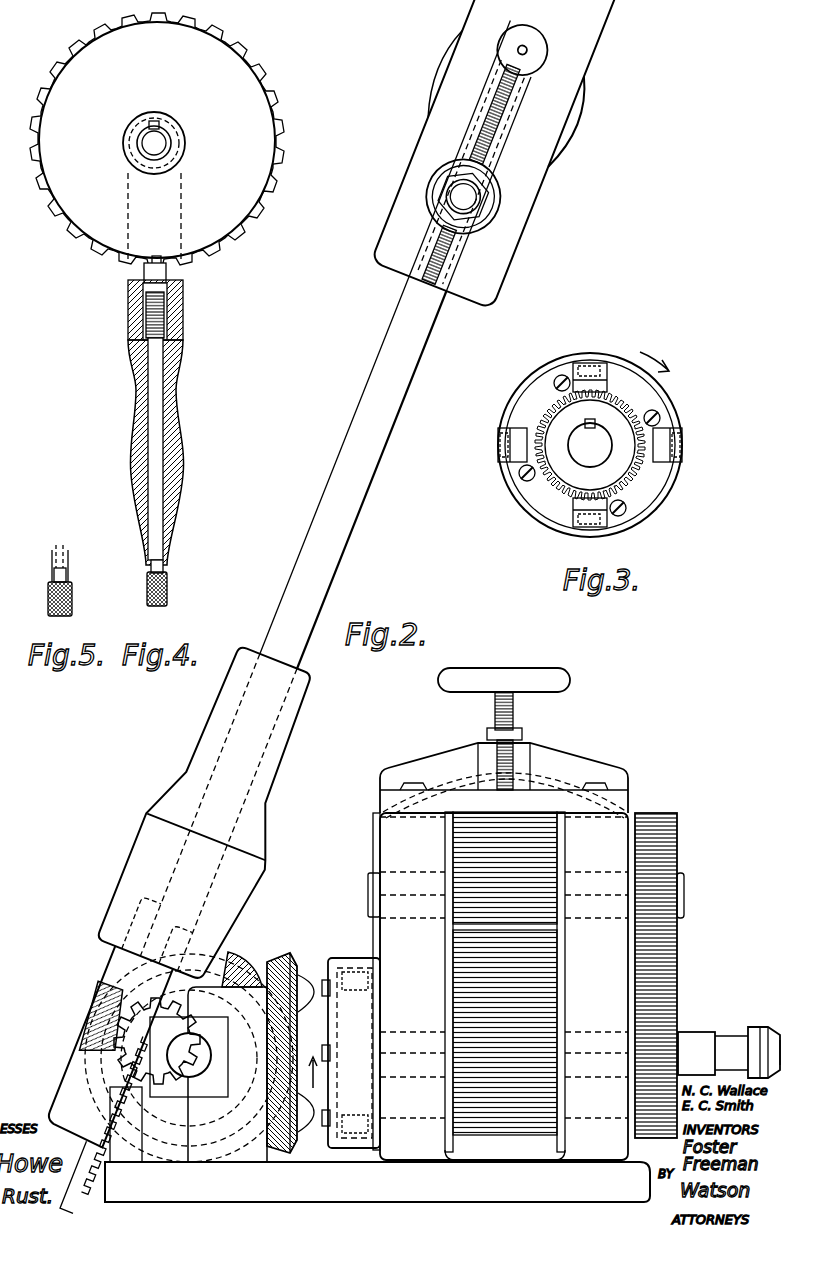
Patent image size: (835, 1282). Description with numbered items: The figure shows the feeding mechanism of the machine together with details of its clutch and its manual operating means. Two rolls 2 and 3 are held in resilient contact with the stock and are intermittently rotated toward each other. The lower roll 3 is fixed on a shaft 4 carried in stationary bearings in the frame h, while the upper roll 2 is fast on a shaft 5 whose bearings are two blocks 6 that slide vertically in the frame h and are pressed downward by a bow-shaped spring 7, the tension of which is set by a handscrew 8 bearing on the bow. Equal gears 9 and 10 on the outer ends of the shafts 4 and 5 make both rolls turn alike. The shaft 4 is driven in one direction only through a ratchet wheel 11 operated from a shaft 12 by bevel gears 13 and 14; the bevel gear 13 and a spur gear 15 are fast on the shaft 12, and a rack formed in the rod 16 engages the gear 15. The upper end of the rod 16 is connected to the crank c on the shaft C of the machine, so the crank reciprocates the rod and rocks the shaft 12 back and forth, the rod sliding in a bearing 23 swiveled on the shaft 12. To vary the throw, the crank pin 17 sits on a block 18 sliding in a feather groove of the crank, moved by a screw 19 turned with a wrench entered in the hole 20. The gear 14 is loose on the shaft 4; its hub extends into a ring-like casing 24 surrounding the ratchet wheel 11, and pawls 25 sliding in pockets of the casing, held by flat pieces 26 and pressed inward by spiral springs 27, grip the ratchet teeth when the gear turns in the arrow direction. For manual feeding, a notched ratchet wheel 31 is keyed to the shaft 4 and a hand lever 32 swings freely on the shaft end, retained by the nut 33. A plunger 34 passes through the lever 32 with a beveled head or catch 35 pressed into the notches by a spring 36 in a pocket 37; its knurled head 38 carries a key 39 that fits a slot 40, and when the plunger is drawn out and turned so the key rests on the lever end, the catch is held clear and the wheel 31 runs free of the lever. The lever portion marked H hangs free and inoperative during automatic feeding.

In FIG. 2, the upper feed roll 2 is at (560, 864).
In FIG. 2, the lower feed roll 3 is at (560, 998).
In FIG. 4, the lower roll shaft 4 is at (154, 143).
In FIG. 3, the lower roll shaft 4 is at (590, 443).
In FIG. 2, the lower roll shaft 4 is at (713, 1053).
In FIG. 2, the upper roll shaft 5 is at (685, 890).
In FIG. 2, the bearing blocks 6 is at (380, 813).
In FIG. 2, the bow-shaped spring 7 is at (590, 806).
In FIG. 2, the handscrew 8 is at (510, 670).
In FIG. 2, the gear 9 is at (678, 1002).
In FIG. 2, the gear 10 is at (678, 845).
In FIG. 3, the ratchet wheel 11 is at (590, 445).
In FIG. 2, the ratchet wheel 11 is at (359, 1051).
In FIG. 2, the shaft 12 is at (189, 1058).
In FIG. 2, the bevel gear 13 is at (244, 970).
In FIG. 2, the bevel gear 14 is at (292, 975).
In FIG. 2, the spur gear 15 is at (157, 1041).
In FIG. 2, the rack rod 16 is at (282, 614).
In FIG. 2, the crank pin 17 is at (463, 197).
In FIG. 2, the block 18 is at (494, 170).
In FIG. 2, the adjusting screw 19 is at (510, 118).
In FIG. 2, the wrench hole 20 is at (530, 49).
In FIG. 2, the swiveled bearing 23 is at (93, 1072).
In FIG. 3, the ring-like casing 24 is at (676, 482).
In FIG. 2, the ring-like casing 24 is at (360, 960).
In FIG. 3, the pawls 25 is at (608, 386).
In FIG. 2, the pawls 25 is at (345, 990).
In FIG. 3, the flat retaining pieces 26 is at (524, 432).
In FIG. 3, the spiral springs 27 is at (600, 366).
In FIG. 4, the hand ratchet wheel 31 is at (157, 140).
In FIG. 4, the hand lever 32 is at (132, 417).
In FIG. 2, the nut 33 is at (760, 1027).
In FIG. 4, the plunger 34 is at (160, 470).
In FIG. 4, the head or catch 35 is at (167, 275).
In FIG. 4, the spring 36 is at (168, 310).
In FIG. 4, the pocket 37 is at (132, 318).
In FIG. 4, the knurled head 38 is at (168, 585).
In FIG. 5, the knurled head 38 is at (73, 600).
In FIG. 4, the key 39 is at (165, 562).
In FIG. 5, the key 39 is at (70, 577).
In FIG. 5, the slot 40 is at (70, 557).
In FIG. 2, the machine shaft C is at (582, 128).
In FIG. 2, the crank c is at (506, 266).
In FIG. 2, the handle H is at (219, 812).
In FIG. 2, the frame h is at (407, 957).